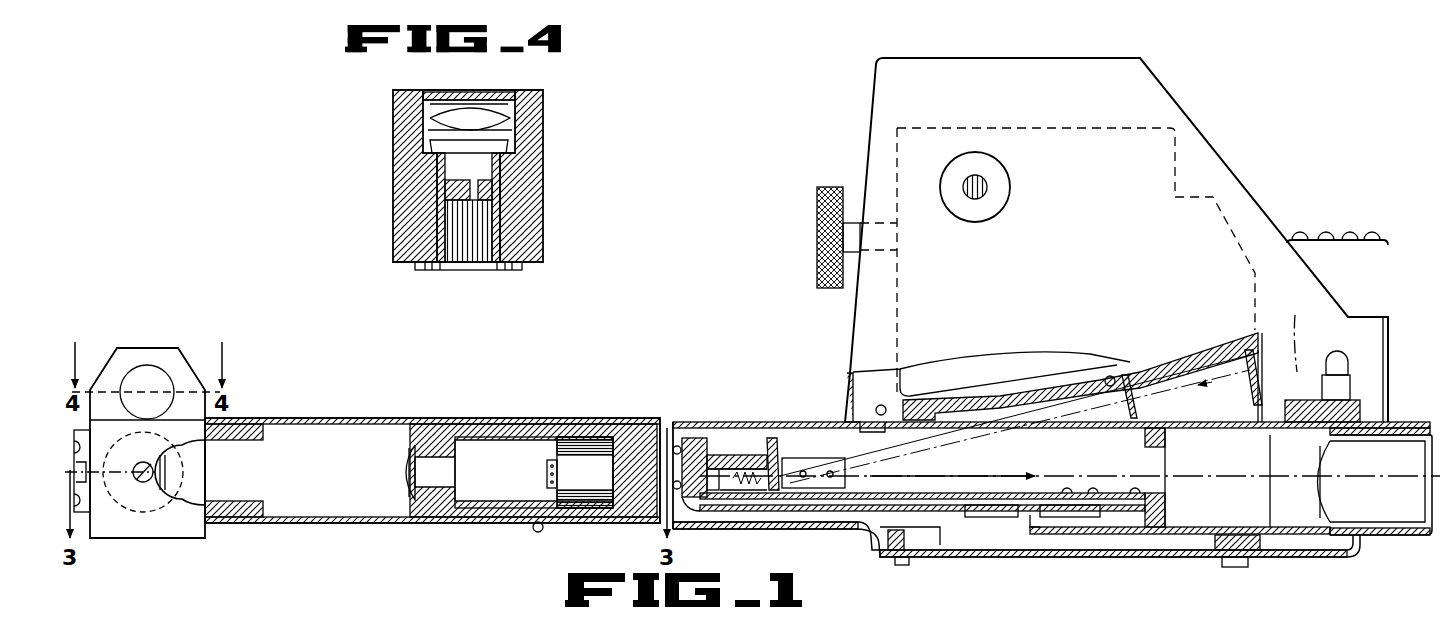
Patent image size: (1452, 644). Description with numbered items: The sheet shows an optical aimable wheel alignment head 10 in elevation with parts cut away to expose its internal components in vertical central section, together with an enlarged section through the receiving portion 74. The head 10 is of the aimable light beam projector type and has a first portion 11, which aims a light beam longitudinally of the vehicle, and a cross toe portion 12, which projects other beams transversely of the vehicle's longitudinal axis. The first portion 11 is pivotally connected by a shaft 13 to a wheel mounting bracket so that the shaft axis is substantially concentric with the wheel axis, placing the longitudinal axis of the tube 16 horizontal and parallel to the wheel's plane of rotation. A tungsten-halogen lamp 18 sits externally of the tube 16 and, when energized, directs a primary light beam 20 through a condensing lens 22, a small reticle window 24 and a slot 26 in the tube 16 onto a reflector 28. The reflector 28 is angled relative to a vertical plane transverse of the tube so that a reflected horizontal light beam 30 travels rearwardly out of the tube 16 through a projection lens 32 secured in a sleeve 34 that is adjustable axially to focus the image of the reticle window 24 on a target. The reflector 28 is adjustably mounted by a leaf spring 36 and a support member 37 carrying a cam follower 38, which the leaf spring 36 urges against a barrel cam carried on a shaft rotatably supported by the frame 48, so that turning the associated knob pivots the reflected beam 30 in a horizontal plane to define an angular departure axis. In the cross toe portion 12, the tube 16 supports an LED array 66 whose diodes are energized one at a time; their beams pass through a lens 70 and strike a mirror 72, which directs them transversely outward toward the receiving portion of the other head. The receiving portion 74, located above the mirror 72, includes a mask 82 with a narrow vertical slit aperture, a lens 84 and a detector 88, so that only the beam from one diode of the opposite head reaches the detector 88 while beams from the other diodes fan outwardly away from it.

In FIG. 1, the optical aimable wheel alignment head 10 is at (1250, 105).
In FIG. 1, the first portion 11 is at (765, 378).
In FIG. 1, the cross toe portion 12 is at (455, 392).
In FIG. 4, the cross toe portion 12 is at (388, 178).
In FIG. 1, the shaft 13 is at (982, 186).
In FIG. 1, the tube 16 is at (705, 421).
In FIG. 1, the tungsten-halogen lamp 18 is at (1347, 357).
In FIG. 1, the primary light beam 20 is at (1297, 330).
In FIG. 1, the condensing lens 22 is at (1250, 355).
In FIG. 1, the reticle window 24 is at (1140, 380).
In FIG. 1, the slot 26 is at (1045, 425).
In FIG. 1, the reflector 28 is at (774, 440).
In FIG. 1, the reflected horizontal light beam 30 is at (955, 470).
In FIG. 1, the projection lens 32 is at (1330, 470).
In FIG. 1, the sleeve 34 is at (1412, 425).
In FIG. 1, the leaf spring 36 is at (790, 467).
In FIG. 1, the support member 37 is at (778, 511).
In FIG. 1, the cam follower 38 is at (988, 512).
In FIG. 1, the frame 48 is at (1080, 558).
In FIG. 1, the LED array 66 is at (545, 475).
In FIG. 1, the lens 70 is at (404, 472).
In FIG. 1, the mirror 72 is at (166, 474).
In FIG. 1, the receiving portion 74 is at (152, 352).
In FIG. 4, the receiving portion 74 is at (395, 118).
In FIG. 4, the mask 82 is at (488, 97).
In FIG. 4, the lens 84 is at (500, 132).
In FIG. 4, the detector 88 is at (474, 184).